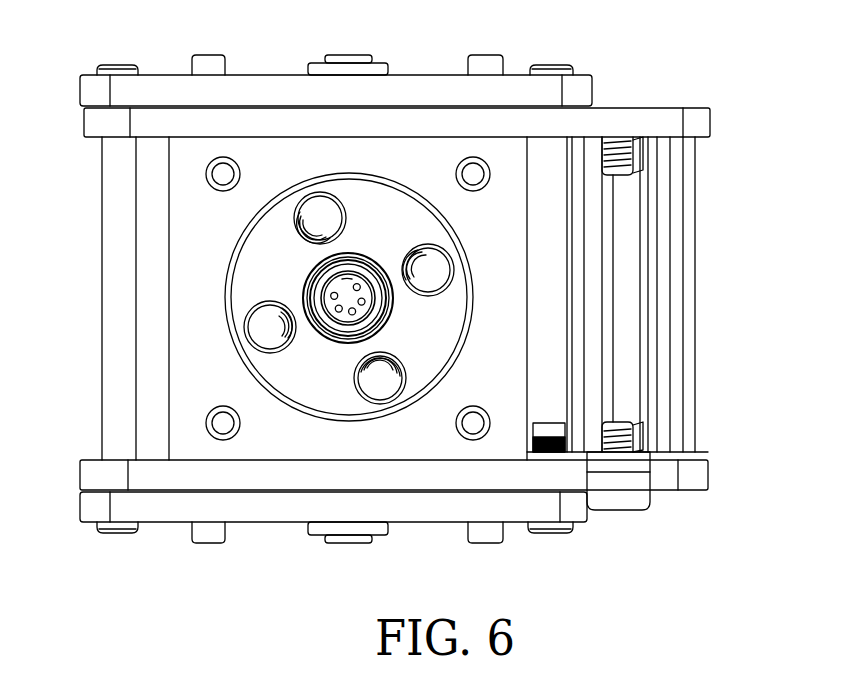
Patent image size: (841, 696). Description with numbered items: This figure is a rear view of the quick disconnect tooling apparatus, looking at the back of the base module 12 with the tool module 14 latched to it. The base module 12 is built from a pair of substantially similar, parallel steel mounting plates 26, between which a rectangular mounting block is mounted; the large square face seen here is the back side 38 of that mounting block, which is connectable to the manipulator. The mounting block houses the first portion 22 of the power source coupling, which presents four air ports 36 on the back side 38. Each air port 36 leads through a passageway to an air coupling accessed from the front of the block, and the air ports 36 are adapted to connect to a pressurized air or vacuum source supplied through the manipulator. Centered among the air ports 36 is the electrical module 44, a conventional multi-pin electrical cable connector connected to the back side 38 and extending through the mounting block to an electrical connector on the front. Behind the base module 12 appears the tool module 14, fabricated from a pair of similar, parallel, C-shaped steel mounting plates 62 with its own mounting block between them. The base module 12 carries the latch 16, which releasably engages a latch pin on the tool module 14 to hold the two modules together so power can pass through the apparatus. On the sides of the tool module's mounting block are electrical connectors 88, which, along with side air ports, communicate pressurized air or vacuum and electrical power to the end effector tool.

The base module 12 is at (657, 103).
The tool module 14 is at (550, 60).
The latch 16 is at (707, 235).
The first portion of the power source coupling 22 is at (310, 370).
The mounting plates 26 is at (259, 75).
The air ports 36 is at (319, 205).
The back side 38 is at (177, 169).
The electrical module 44 is at (314, 270).
The mounting plates 62 is at (97, 122).
The electrical connectors 88 is at (350, 55).